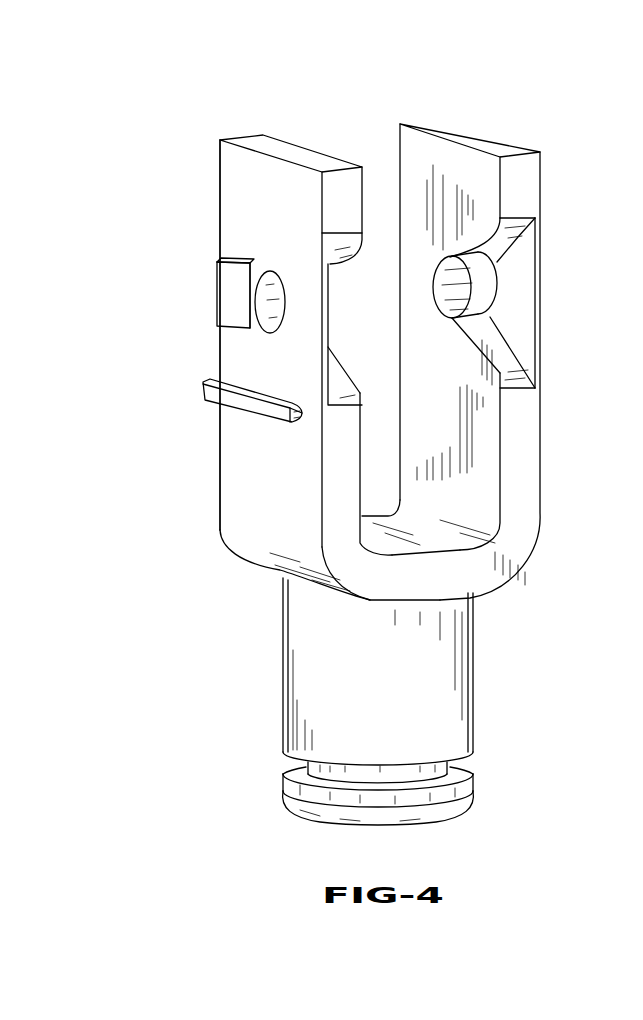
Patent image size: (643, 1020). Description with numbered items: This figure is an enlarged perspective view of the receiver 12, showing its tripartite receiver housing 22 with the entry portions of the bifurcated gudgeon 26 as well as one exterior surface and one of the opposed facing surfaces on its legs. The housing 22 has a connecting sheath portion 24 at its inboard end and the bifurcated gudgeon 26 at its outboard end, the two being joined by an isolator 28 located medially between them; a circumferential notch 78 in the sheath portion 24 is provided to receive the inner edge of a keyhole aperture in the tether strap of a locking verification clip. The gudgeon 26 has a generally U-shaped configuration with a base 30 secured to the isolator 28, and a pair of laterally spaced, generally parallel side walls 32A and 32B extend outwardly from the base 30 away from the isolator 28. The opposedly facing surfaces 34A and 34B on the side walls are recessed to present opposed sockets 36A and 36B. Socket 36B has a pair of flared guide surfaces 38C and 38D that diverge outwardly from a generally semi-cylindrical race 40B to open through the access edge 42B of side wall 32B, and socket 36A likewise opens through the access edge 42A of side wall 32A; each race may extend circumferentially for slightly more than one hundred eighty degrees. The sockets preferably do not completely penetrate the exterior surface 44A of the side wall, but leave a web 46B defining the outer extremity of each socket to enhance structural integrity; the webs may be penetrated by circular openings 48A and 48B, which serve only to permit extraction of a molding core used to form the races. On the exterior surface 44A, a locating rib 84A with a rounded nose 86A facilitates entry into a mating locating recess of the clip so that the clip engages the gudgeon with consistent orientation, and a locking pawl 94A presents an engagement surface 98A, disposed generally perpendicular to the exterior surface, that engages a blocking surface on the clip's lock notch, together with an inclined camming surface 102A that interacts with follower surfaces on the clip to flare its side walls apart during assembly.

The receiver 12 is at (222, 528).
The receiver housing 22 is at (285, 695).
The connecting sheath portion 24 is at (455, 806).
The bifurcated gudgeon 26 is at (513, 443).
The isolator 28 is at (445, 700).
The base 30 is at (413, 570).
The side wall 32A is at (262, 172).
The side wall 32B is at (513, 190).
The opposedly facing surface 34A is at (284, 137).
The opposedly facing surface 34B is at (443, 158).
The socket 36A is at (337, 373).
The socket 36B is at (517, 297).
The flared guide surface 38C is at (518, 237).
The flared guide surface 38D is at (493, 350).
The semi-cylindrical race 40B is at (447, 305).
The access edge 42A is at (340, 503).
The access edge 42B is at (519, 417).
The exterior surface 44A is at (233, 193).
The web 46B is at (519, 332).
The circular opening 48A is at (281, 305).
The circular opening 48B is at (488, 281).
The circumferential notch 78 is at (467, 771).
The locating rib 84A is at (217, 398).
The nose 86A is at (297, 423).
The locking pawl 94A is at (233, 263).
The engagement surface 98A is at (215, 282).
The inclined camming surface 102A is at (232, 293).